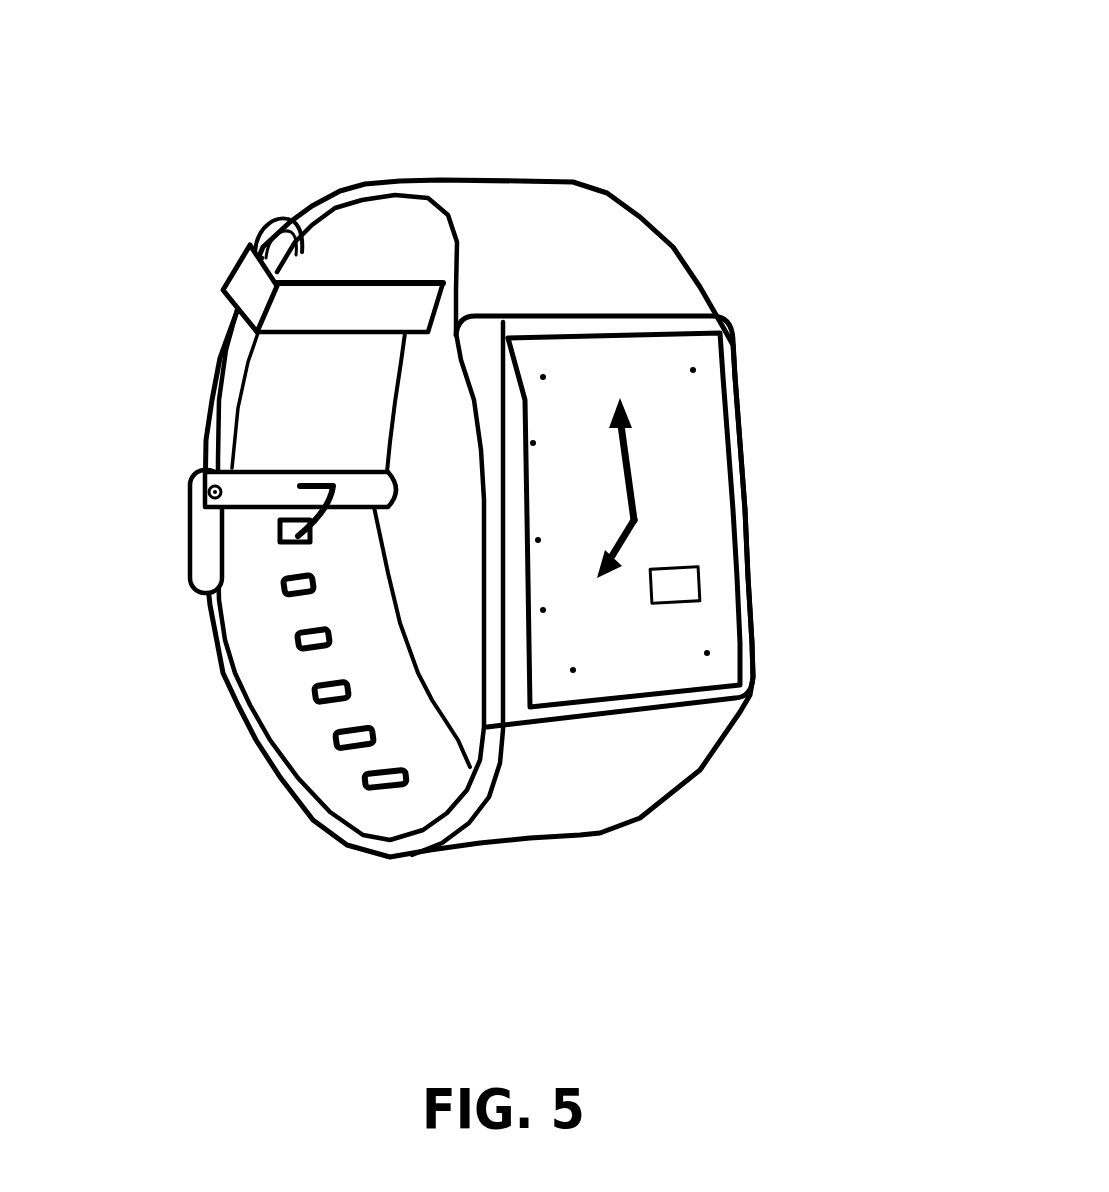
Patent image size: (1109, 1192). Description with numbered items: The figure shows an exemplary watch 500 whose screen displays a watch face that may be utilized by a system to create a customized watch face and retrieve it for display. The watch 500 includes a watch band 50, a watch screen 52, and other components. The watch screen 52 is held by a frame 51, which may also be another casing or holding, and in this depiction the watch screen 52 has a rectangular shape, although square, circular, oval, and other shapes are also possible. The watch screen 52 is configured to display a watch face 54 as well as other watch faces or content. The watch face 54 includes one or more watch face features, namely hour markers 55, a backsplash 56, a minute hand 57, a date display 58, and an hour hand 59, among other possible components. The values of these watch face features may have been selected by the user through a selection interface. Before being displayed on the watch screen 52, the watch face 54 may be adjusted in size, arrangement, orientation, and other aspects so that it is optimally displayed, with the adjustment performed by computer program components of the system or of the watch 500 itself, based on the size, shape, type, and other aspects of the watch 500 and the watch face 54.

The watch 500 is at (503, 475).
The watch band 50 is at (576, 475).
The frame 51 is at (471, 559).
The watch screen 52 is at (656, 435).
The watch face 54 is at (693, 525).
The hour markers 55 is at (717, 724).
The backsplash 56 is at (737, 510).
The minute hand 57 is at (528, 459).
The date display 58 is at (806, 616).
The hour hand 59 is at (528, 576).